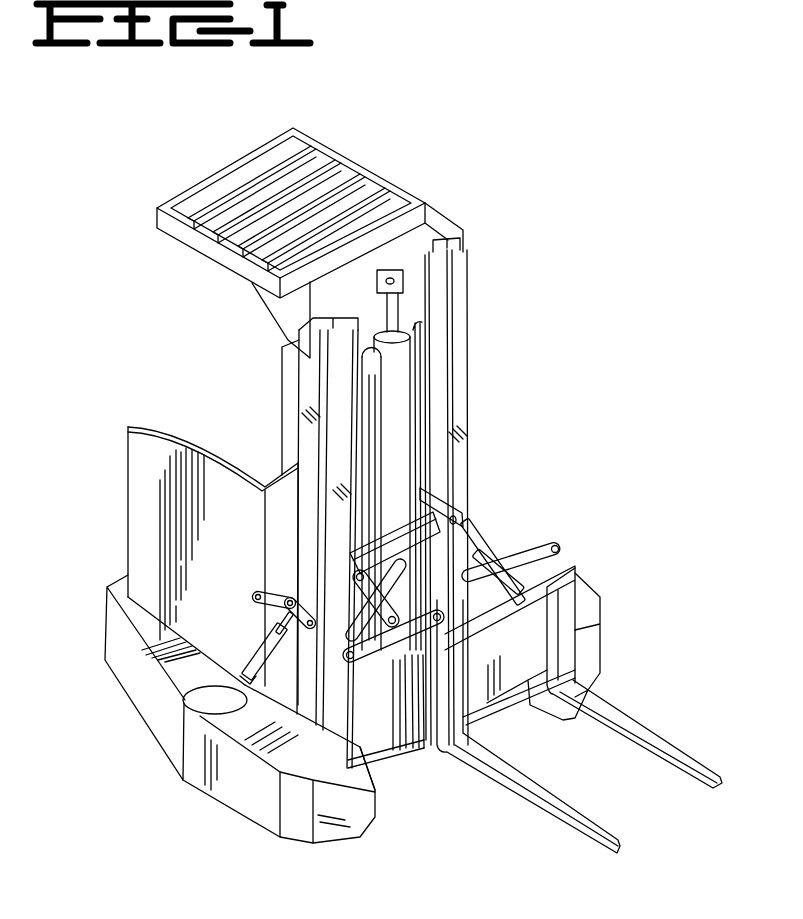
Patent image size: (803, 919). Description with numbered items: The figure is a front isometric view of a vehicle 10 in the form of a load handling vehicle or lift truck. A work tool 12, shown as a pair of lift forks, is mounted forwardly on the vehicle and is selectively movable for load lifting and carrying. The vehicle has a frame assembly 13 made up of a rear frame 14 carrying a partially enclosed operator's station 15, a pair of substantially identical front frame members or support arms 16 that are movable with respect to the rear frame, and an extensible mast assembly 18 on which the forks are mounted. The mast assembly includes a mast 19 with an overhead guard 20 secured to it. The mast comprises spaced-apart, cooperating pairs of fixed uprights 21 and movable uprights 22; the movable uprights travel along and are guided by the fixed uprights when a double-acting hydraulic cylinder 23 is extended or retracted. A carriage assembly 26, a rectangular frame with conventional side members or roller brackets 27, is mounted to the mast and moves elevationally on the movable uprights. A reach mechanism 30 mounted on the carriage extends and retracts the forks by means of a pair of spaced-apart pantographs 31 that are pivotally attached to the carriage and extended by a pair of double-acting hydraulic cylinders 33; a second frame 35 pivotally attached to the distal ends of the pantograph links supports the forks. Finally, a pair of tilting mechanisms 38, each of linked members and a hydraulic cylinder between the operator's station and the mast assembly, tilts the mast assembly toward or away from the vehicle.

The vehicle 10 is at (575, 350).
The work tool 12 is at (635, 745).
The frame assembly 13 is at (138, 723).
The rear frame 14 is at (113, 622).
The operator's station 15 is at (243, 562).
The front frame members 16 is at (600, 670).
The mast assembly 18 is at (492, 380).
The mast 19 is at (462, 230).
The overhead guard 20 is at (198, 152).
The fixed uprights 21 is at (467, 244).
The movable uprights 22 is at (459, 298).
The hydraulic cylinder 23 is at (395, 431).
The carriage assembly 26 is at (440, 530).
The roller brackets 27 is at (452, 500).
The reach mechanism 30 is at (397, 706).
The pantographs 31 is at (566, 552).
The hydraulic cylinders 33 is at (484, 554).
The second frame 35 is at (537, 651).
The tilting mechanisms 38 is at (252, 619).